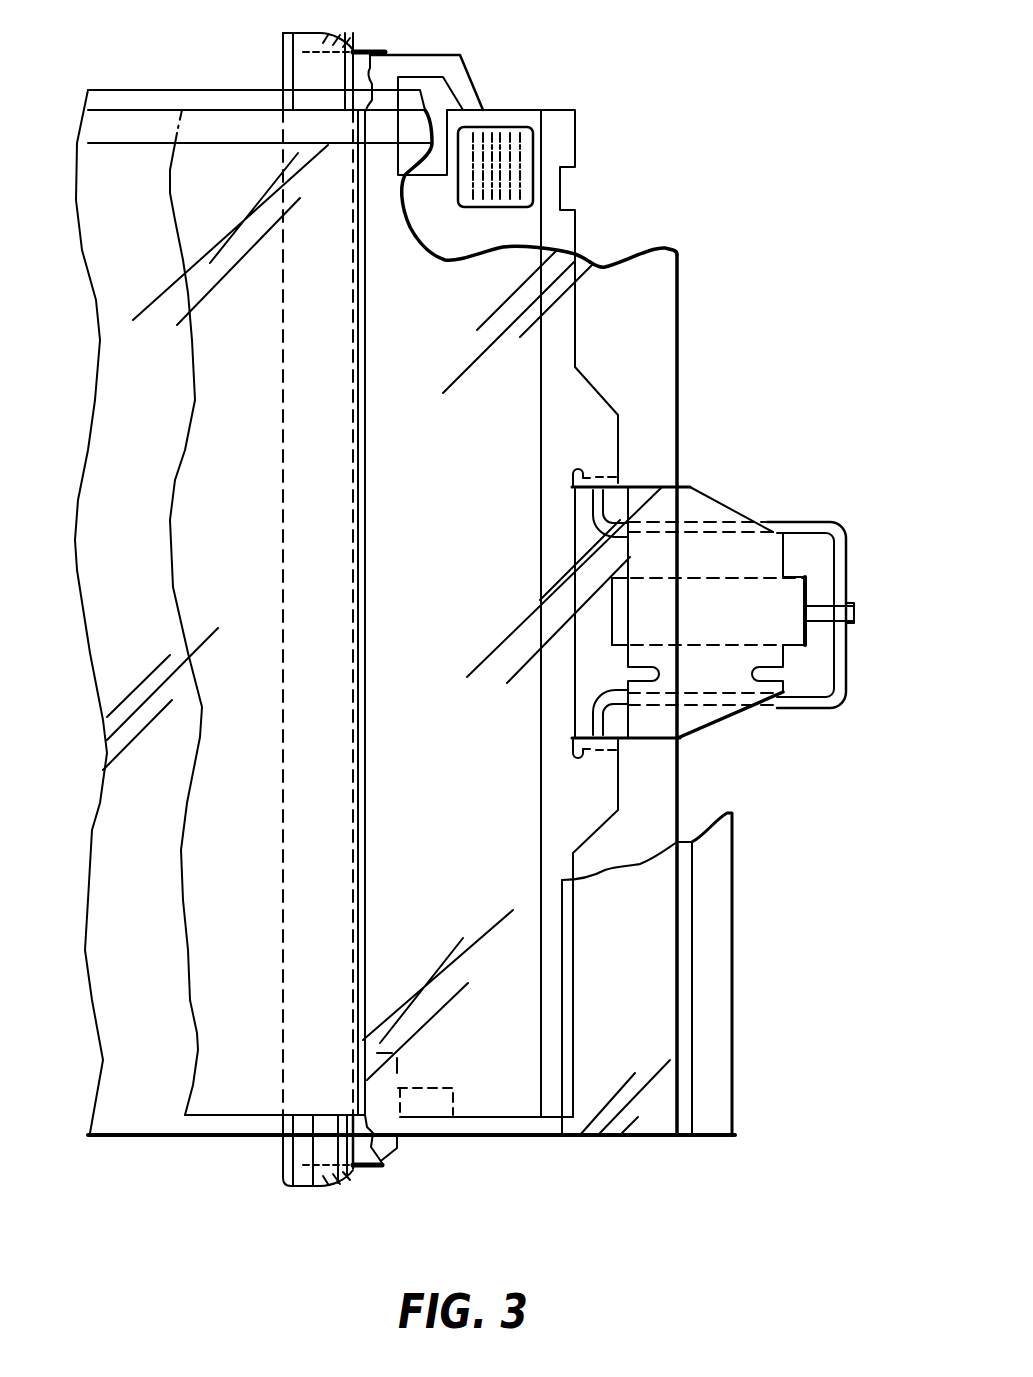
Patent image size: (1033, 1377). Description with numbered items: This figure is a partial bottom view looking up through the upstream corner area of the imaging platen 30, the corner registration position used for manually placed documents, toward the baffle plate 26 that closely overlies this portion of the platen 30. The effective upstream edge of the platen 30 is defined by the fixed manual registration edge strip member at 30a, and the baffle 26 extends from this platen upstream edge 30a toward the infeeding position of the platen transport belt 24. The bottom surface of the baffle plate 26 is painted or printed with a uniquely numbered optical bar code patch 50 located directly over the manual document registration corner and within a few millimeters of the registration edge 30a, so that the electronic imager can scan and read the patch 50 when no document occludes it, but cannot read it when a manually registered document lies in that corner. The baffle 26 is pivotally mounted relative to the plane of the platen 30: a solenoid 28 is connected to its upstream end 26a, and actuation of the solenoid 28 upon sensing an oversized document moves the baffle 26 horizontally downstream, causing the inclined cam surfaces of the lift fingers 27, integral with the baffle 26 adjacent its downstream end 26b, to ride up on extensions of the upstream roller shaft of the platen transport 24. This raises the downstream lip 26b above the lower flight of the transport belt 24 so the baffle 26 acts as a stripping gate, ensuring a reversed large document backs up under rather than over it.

The platen transport belt 24 is at (243, 1090).
The baffle plate 26 is at (517, 110).
The upstream end of the baffle 26a is at (584, 360).
The downstream end of the baffle 26b is at (367, 563).
The lift fingers 27 is at (370, 50).
The solenoid 28 is at (803, 650).
The imaging platen 30 is at (633, 252).
The upstream platen edge 30a is at (563, 1137).
The optical bar code patch 50 is at (510, 207).